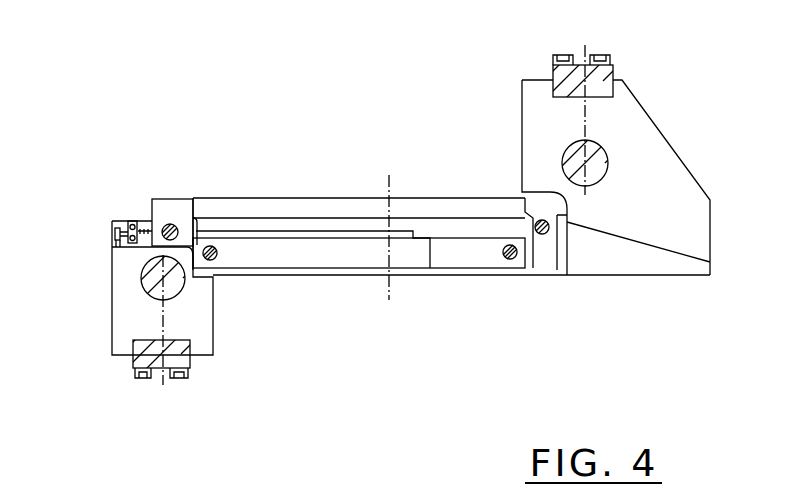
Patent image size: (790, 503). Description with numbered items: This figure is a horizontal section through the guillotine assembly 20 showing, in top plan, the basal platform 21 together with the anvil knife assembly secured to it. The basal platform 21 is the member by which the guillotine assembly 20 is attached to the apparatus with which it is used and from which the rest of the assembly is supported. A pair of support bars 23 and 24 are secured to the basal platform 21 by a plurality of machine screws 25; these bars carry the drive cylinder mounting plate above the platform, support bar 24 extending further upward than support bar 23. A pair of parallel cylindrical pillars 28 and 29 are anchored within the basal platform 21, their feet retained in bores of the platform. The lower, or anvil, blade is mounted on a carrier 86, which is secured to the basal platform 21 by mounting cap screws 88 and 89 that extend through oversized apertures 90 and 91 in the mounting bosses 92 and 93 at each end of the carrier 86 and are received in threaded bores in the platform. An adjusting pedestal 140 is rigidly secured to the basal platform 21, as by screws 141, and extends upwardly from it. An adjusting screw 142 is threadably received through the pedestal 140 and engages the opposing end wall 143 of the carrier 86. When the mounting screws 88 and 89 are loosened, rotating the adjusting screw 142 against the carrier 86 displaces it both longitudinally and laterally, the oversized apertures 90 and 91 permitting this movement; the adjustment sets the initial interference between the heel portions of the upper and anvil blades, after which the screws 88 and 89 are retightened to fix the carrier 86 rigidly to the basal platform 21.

The guillotine assembly 20 is at (398, 325).
The basal platform 21 is at (125, 325).
The support bar 23 is at (147, 357).
The support bar 24 is at (608, 78).
The machine screws 25 is at (180, 378).
The cylindrical pillar 28 is at (595, 158).
The cylindrical pillar 29 is at (148, 285).
The carrier 86 is at (478, 267).
The mounting cap screw 88 is at (186, 230).
The mounting cap screw 89 is at (540, 222).
The oversized aperture 90 is at (176, 226).
The oversized aperture 91 is at (540, 265).
The mounting boss 92 is at (168, 212).
The mounting boss 93 is at (545, 257).
The adjusting pedestal 140 is at (130, 224).
The screws 141 is at (116, 230).
The adjusting screw 142 is at (118, 247).
The end wall 143 is at (152, 215).